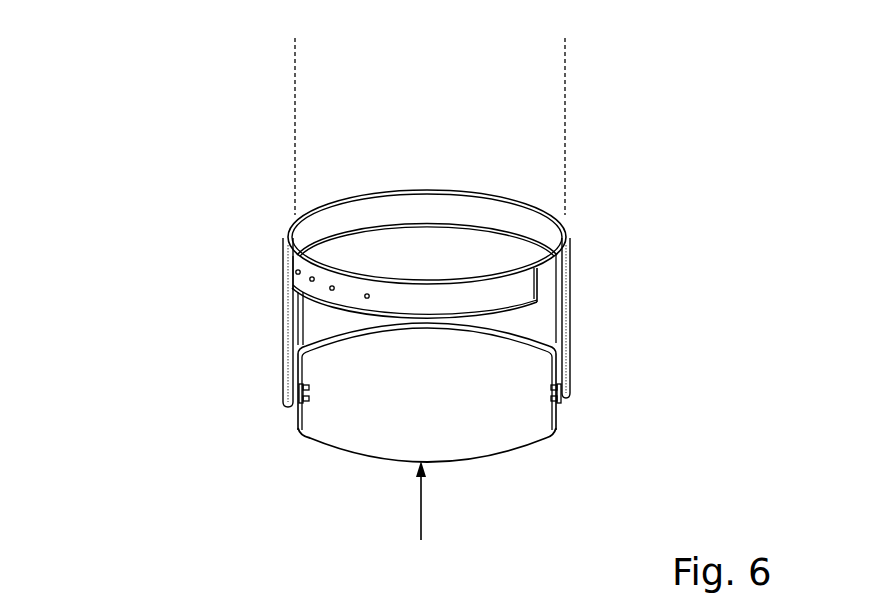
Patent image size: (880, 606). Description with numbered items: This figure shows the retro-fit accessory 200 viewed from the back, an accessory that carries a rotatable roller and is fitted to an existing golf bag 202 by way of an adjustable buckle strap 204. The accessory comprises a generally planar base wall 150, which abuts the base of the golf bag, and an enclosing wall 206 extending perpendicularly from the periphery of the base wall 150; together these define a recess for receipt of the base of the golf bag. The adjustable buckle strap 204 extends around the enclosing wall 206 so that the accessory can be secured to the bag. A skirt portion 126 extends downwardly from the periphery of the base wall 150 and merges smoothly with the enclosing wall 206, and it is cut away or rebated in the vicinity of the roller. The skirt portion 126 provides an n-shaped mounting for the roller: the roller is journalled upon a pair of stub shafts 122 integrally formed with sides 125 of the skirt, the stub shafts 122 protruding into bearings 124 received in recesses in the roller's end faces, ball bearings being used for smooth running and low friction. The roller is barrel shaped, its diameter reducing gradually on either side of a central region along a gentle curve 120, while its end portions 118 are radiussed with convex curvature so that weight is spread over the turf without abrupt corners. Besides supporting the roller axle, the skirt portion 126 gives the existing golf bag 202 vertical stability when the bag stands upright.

The retro-fit accessory 200 is at (168, 135).
The existing golf bag 202 is at (295, 116).
The adjustable buckle strap 204 is at (297, 267).
The enclosing wall 206 is at (338, 217).
The base wall 150 is at (448, 242).
The skirt portion 126 is at (553, 290).
The stub shaft 122 is at (570, 377).
The bearing 124 is at (562, 402).
The side 125 is at (288, 368).
The end portion 118 is at (315, 450).
The gentle curve 120 is at (419, 512).